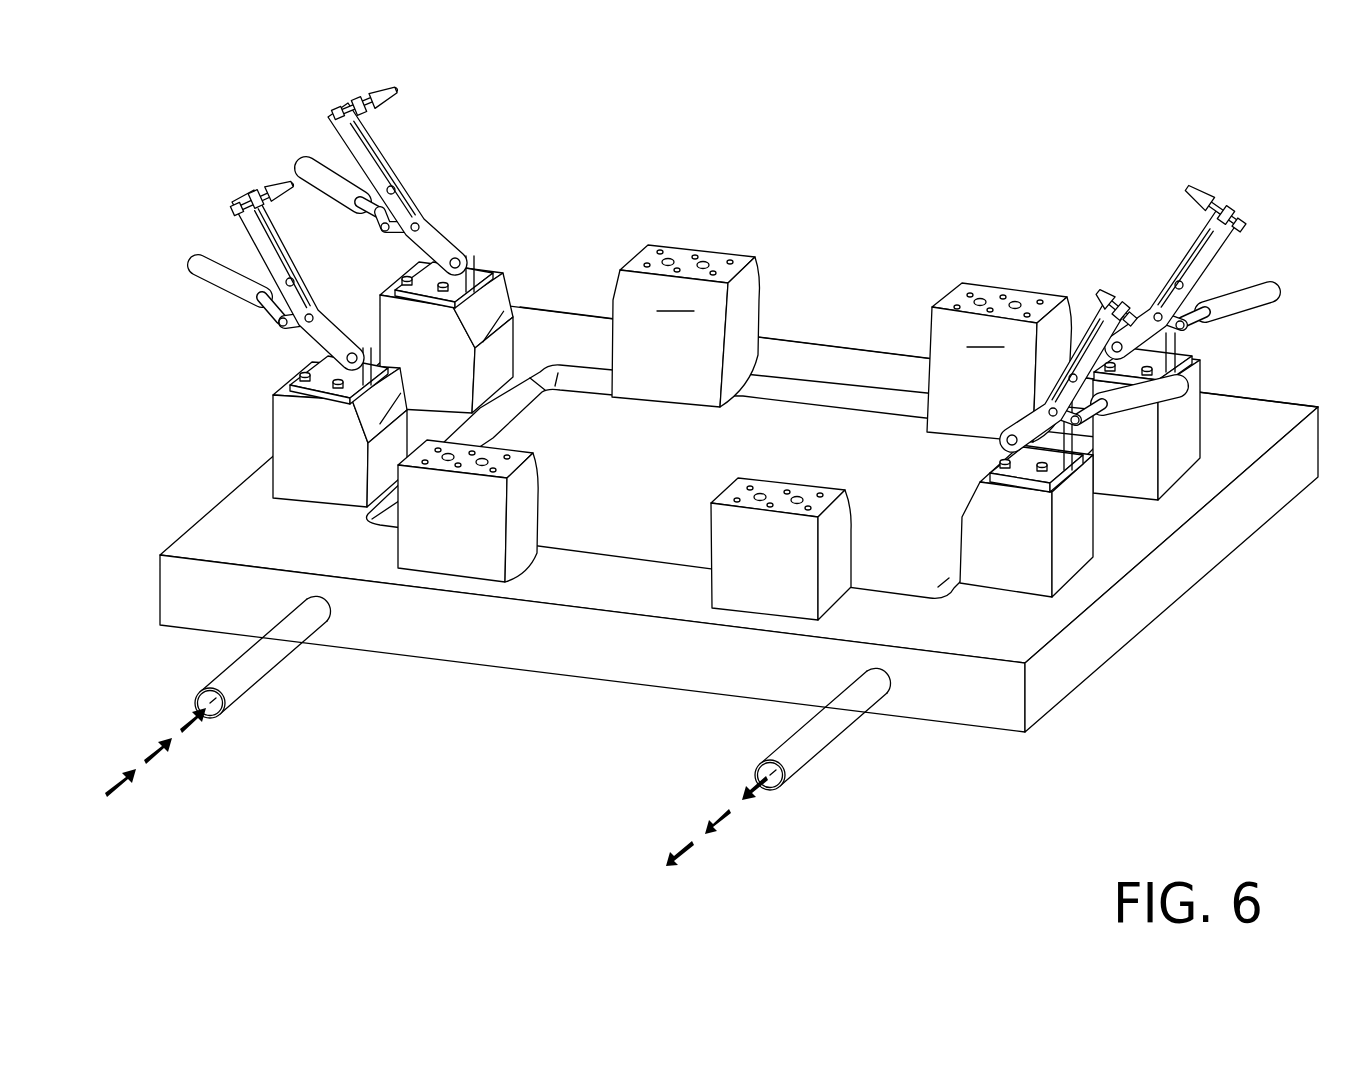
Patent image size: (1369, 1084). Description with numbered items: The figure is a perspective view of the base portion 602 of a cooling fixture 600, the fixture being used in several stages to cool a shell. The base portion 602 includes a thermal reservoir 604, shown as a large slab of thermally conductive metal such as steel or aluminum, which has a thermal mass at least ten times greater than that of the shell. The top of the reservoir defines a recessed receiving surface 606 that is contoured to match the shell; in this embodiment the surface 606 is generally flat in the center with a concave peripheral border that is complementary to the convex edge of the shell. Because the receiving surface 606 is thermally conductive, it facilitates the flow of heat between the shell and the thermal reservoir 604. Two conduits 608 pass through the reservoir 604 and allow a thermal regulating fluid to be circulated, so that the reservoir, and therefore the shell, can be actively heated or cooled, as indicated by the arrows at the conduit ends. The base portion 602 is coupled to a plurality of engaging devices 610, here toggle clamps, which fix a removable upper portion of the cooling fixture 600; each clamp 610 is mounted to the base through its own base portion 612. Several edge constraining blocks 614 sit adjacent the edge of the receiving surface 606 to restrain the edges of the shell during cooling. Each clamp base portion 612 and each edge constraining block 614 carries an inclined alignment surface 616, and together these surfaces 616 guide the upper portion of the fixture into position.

The cooling fixture 600 is at (510, 783).
The base portion 602 is at (808, 352).
The thermal reservoir 604 is at (531, 655).
The recessed receiving surface 606 is at (669, 471).
The conduits 608 is at (246, 675).
The engaging devices (clamps) 610 is at (298, 336).
The base portions 612 is at (397, 342).
The edge constraining blocks 614 is at (693, 243).
The inclined alignment surface 616 is at (682, 355).